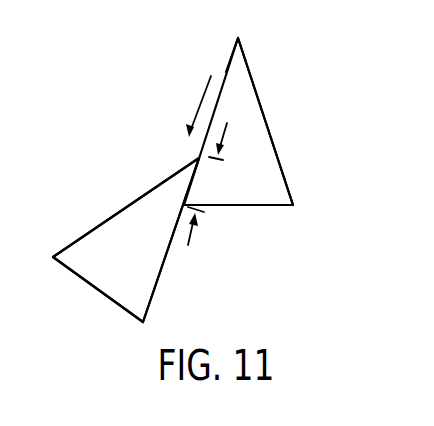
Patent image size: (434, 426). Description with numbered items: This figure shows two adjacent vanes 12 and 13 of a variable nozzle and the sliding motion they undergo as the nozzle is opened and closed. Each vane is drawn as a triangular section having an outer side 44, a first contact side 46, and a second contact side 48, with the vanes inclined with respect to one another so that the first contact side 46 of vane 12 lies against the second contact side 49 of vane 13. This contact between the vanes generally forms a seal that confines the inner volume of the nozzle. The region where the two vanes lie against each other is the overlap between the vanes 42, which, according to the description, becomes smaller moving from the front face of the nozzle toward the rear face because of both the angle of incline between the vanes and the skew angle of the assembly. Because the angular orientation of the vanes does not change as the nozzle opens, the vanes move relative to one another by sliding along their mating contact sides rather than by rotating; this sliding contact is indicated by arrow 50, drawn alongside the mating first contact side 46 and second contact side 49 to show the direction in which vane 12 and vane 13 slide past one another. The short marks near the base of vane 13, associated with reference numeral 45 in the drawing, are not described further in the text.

The vane 12 is at (97, 258).
The vane 13 is at (272, 192).
The overlap between the vanes 42 is at (188, 237).
The outer side 44 is at (101, 293).
The base surface of second prism 45 is at (268, 207).
The first contact side 46 is at (259, 97).
The second contact side 48 is at (145, 193).
The second contact side 49 is at (227, 70).
The arrow 50 is at (203, 95).